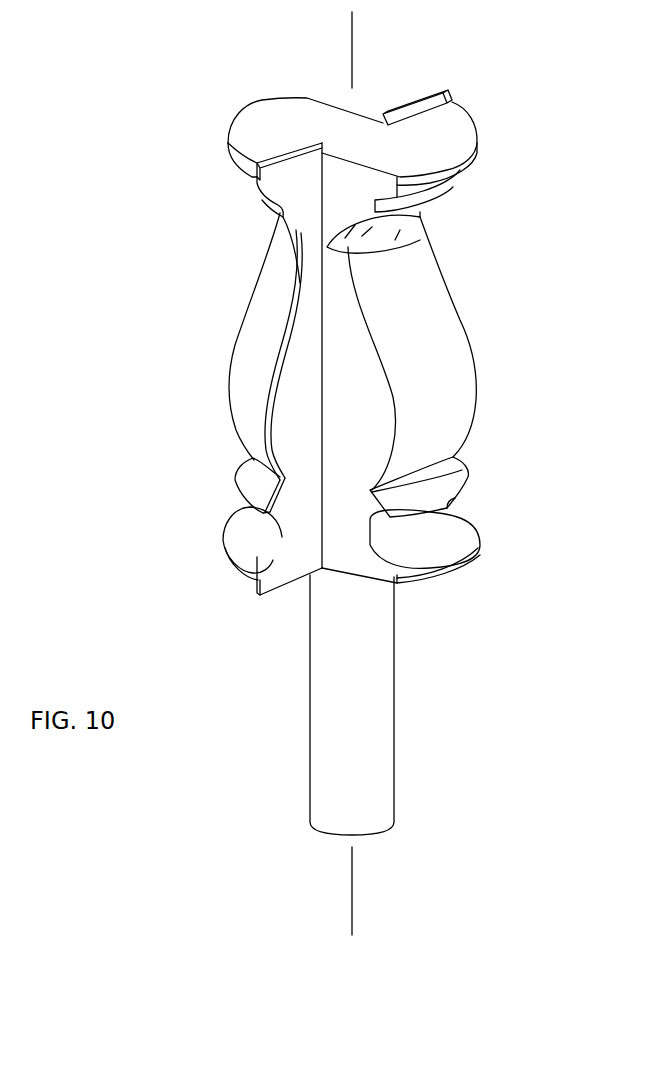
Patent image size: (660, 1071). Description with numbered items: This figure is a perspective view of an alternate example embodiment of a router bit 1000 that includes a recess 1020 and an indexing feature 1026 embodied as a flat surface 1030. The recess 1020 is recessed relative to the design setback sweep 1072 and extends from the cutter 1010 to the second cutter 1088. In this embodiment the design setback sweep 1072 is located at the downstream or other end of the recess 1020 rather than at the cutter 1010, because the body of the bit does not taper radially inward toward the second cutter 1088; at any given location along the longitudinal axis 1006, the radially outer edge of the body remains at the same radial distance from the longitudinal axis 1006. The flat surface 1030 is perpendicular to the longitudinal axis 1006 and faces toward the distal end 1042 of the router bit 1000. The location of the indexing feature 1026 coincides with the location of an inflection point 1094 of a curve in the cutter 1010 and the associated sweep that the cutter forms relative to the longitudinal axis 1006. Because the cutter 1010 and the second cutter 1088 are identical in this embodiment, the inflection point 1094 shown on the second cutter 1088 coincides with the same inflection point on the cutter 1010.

The router bit 1000 is at (187, 150).
The longitudinal axis 1006 is at (353, 62).
The cutter 1010 is at (443, 93).
The distal end 1042 is at (283, 157).
The indexing feature 1026 is at (413, 228).
The flat surface 1030 is at (373, 232).
The recess 1020 is at (377, 230).
The design setback sweep 1072 is at (360, 233).
The inflection point 1094 is at (297, 267).
The second cutter 1088 is at (318, 443).